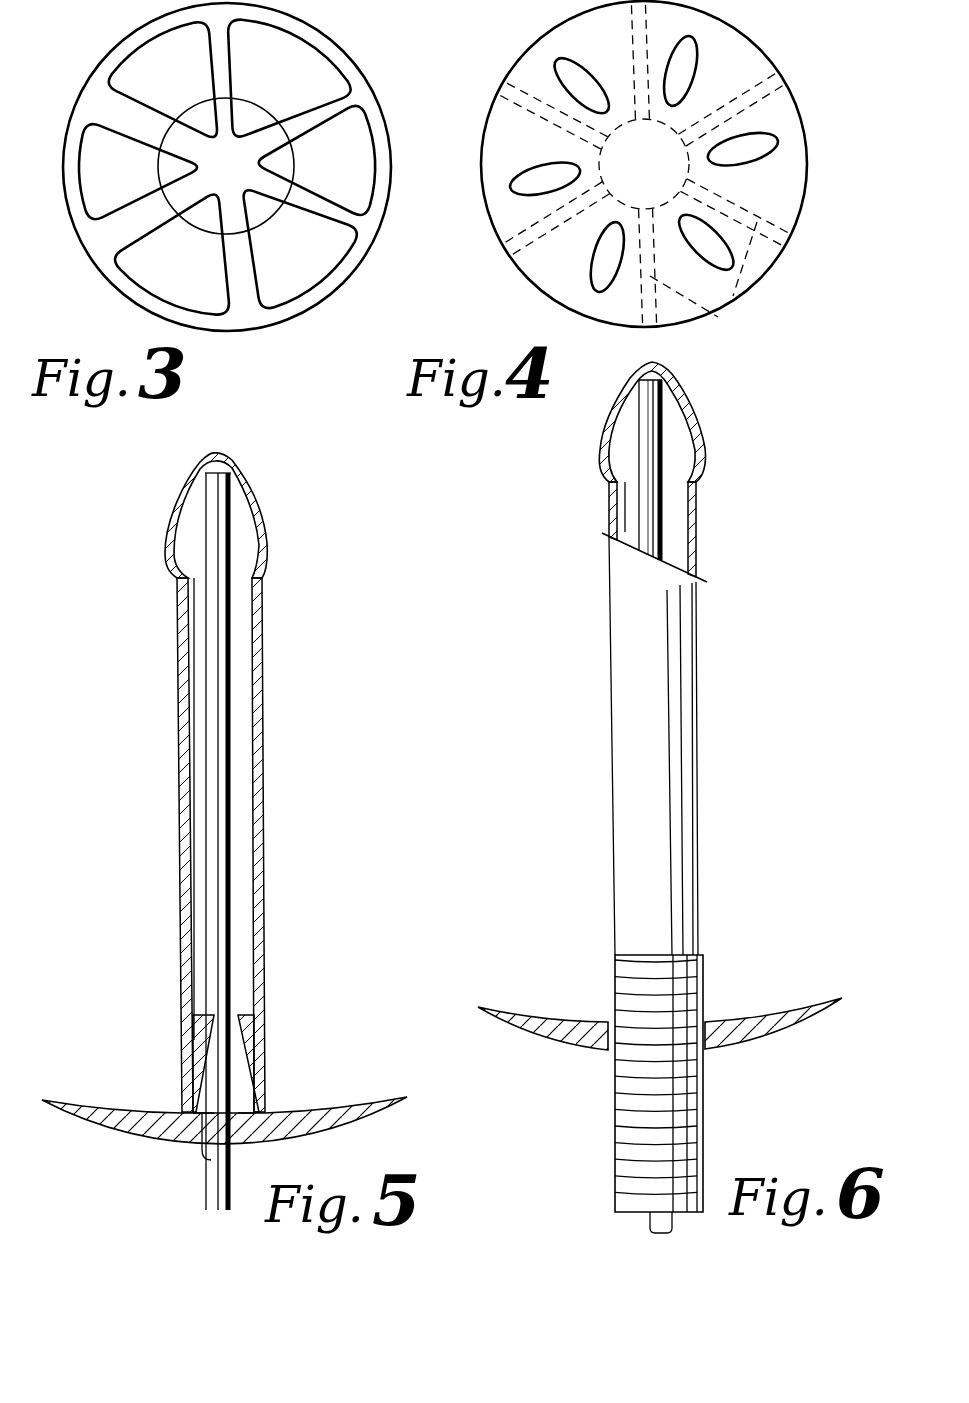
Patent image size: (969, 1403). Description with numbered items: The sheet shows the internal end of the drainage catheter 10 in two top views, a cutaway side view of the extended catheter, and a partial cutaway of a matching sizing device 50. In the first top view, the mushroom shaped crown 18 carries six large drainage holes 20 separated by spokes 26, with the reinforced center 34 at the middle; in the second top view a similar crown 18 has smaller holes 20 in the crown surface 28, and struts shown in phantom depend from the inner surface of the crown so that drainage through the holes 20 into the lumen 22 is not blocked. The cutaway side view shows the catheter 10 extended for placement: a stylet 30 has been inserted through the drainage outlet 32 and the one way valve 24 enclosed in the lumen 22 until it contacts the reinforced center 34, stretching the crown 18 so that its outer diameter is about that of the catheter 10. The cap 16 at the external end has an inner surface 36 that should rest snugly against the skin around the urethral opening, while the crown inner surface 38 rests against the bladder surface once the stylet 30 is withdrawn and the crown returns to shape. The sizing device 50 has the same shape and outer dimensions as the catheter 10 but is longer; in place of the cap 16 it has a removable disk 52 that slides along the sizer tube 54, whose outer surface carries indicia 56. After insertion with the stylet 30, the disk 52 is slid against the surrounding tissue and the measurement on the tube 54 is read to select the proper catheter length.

In FIG. 5, the drainage catheter 10 is at (275, 730).
In FIG. 5, the cap 16 is at (352, 1128).
In FIG. 3, the crown 18 is at (118, 42).
In FIG. 4, the crown 18 is at (510, 45).
In FIG. 5, the crown 18 is at (243, 477).
In FIG. 3, the drainage holes 20 is at (185, 92).
In FIG. 4, the drainage holes 20 is at (746, 143).
In FIG. 5, the drainage holes 20 is at (170, 513).
In FIG. 3, the lumen 22 is at (212, 217).
In FIG. 5, the lumen 22 is at (242, 865).
In FIG. 5, the one way valve 24 is at (243, 1033).
In FIG. 3, the spokes 26 is at (158, 212).
In FIG. 4, the crown surface 28 is at (712, 310).
In FIG. 5, the stylet 30 is at (231, 795).
In FIG. 6, the stylet 30 is at (647, 460).
In FIG. 5, the drainage outlet 32 is at (206, 1147).
In FIG. 3, the reinforced center 34 is at (230, 167).
In FIG. 4, the reinforced center 34 is at (600, 190).
In FIG. 5, the reinforced center 34 is at (208, 470).
In FIG. 5, the cap inner surface 36 is at (285, 1110).
In FIG. 5, the crown inner surface 38 is at (268, 548).
In FIG. 6, the sizing device 50 is at (700, 727).
In FIG. 6, the removable disk 52 is at (588, 1028).
In FIG. 6, the sizer tube 54 is at (682, 825).
In FIG. 6, the indicia 56 is at (653, 975).